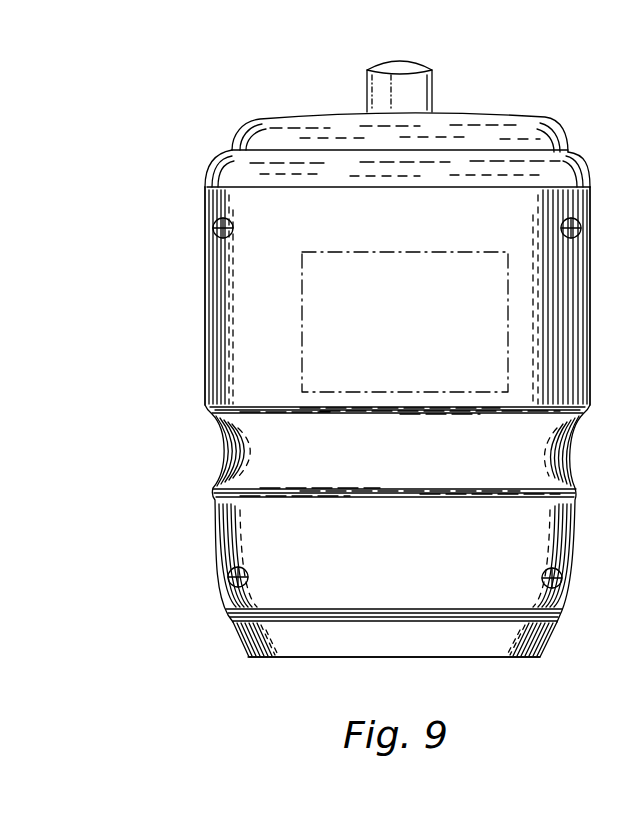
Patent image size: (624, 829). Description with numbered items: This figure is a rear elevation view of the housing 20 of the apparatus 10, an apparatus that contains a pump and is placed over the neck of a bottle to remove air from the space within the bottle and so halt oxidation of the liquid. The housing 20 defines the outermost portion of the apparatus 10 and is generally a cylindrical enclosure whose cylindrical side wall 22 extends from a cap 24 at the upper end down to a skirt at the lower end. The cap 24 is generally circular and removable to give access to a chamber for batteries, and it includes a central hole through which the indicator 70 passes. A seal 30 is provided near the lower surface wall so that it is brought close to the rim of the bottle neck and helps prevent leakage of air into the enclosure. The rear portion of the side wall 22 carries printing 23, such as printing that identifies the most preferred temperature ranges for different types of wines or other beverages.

The apparatus 10 is at (160, 277).
The housing 20 is at (225, 357).
The side wall 22 is at (393, 461).
The printing 23 is at (432, 252).
The cap 24 is at (532, 138).
The seal 30 is at (543, 647).
The indicator 70 is at (367, 87).